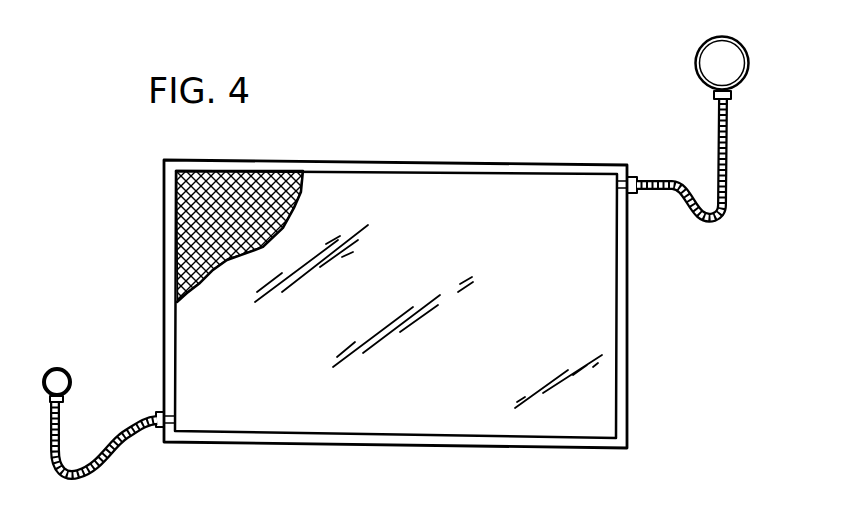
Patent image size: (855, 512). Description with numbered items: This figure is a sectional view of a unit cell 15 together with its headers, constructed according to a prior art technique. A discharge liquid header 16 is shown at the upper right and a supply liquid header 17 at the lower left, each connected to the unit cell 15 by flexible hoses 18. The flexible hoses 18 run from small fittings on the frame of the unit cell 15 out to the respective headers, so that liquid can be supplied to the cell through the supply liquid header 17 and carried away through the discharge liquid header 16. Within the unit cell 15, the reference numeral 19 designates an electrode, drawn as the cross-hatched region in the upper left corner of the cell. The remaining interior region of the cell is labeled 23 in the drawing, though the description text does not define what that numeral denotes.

The unit cell 15 is at (441, 164).
The discharge liquid header 16 is at (697, 58).
The supply liquid header 17 is at (70, 372).
The flexible hose 18 is at (717, 130).
The electrode 19 is at (243, 193).
The transparent pane 23 is at (517, 192).